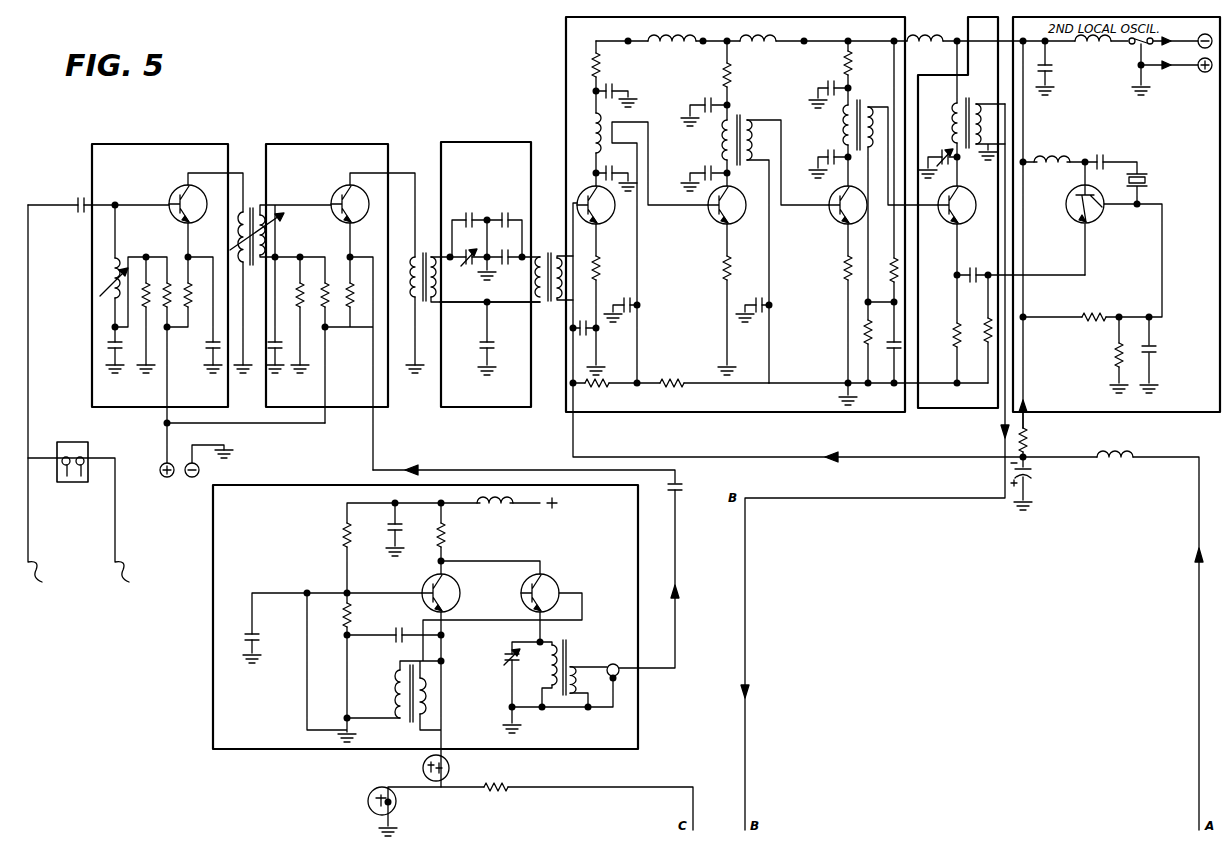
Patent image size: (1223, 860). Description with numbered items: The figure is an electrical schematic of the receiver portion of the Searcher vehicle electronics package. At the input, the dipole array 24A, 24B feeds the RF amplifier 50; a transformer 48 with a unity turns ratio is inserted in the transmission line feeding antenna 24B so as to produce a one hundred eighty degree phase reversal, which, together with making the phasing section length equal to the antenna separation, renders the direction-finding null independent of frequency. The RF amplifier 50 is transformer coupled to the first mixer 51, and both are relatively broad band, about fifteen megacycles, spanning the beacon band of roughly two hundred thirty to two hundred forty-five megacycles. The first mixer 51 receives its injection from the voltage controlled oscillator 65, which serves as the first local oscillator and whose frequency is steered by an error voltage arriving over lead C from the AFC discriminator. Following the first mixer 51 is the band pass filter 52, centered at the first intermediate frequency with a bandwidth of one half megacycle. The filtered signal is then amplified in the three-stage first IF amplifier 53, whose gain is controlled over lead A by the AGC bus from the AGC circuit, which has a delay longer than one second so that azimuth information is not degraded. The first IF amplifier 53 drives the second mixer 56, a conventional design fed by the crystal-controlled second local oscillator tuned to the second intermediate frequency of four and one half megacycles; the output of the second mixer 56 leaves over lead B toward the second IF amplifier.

The dipole array antenna 24A is at (43, 395).
The dipole array antenna 24B is at (88, 521).
The transformer 48 is at (82, 445).
The RF amplifier 50 is at (158, 144).
The first mixer 51 is at (321, 144).
The band pass filter 52 is at (476, 144).
The first IF amplifier 53 is at (566, 63).
The second mixer 56 is at (941, 75).
The voltage controlled oscillator 65 is at (213, 703).